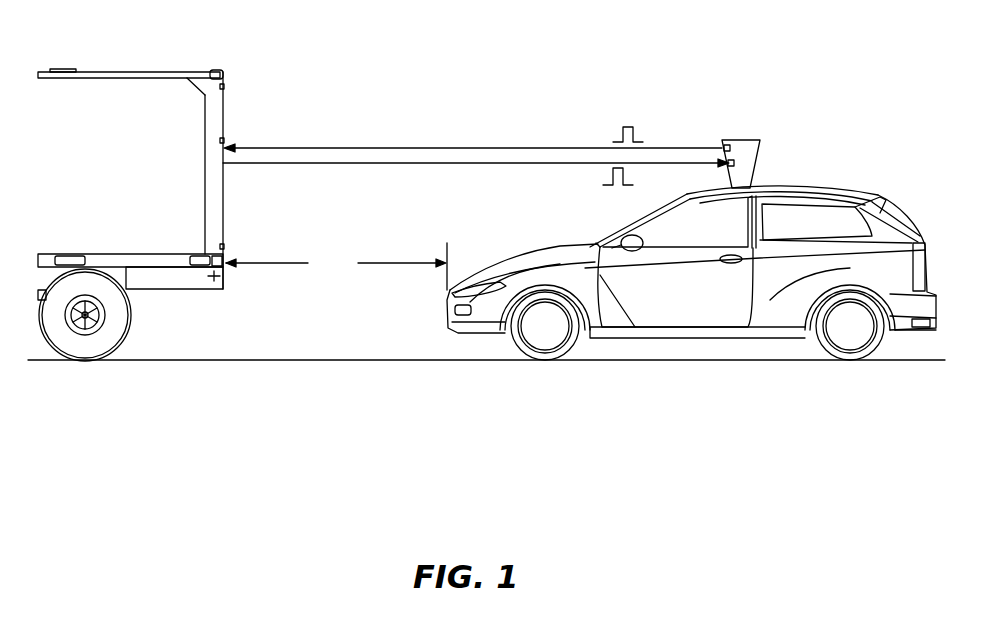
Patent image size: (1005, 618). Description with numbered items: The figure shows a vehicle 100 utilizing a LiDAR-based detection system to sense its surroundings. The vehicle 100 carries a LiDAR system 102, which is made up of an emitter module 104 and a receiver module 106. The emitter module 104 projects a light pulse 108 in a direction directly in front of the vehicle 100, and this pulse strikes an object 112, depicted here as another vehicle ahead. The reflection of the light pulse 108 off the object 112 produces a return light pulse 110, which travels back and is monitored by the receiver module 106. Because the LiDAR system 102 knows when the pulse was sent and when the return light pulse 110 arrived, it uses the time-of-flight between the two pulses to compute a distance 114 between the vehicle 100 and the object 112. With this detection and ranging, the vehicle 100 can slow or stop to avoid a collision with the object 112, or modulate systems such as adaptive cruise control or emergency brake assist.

The vehicle 100 is at (836, 196).
The LiDAR system 102 is at (752, 141).
The emitter module 104 is at (724, 142).
The receiver module 106 is at (736, 163).
The light pulse 108 is at (628, 127).
The return light pulse 110 is at (603, 180).
The object 112 is at (190, 73).
The distance 114 is at (336, 266).